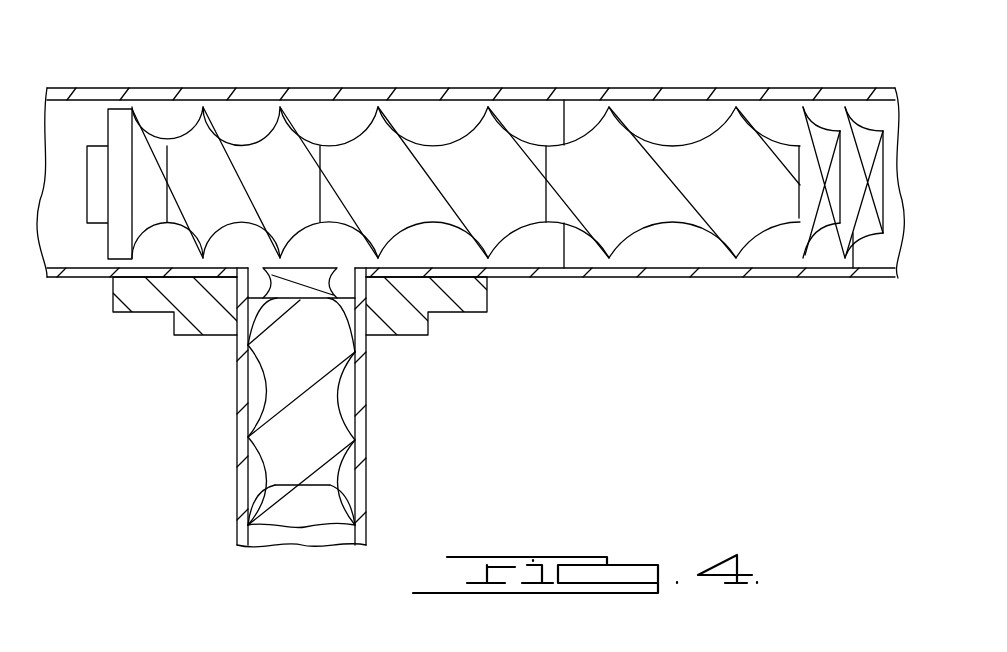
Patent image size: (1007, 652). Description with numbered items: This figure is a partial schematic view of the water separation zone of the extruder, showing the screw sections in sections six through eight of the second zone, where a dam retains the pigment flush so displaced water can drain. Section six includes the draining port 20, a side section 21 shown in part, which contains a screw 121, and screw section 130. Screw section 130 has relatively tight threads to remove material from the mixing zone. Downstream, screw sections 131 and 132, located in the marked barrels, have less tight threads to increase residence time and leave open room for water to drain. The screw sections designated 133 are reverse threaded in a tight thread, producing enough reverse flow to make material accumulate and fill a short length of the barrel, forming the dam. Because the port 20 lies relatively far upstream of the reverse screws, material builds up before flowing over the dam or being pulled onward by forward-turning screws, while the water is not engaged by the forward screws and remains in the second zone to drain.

The port 20 is at (430, 313).
The side section 21 is at (366, 415).
The screw 121 is at (333, 473).
The screw section 130 is at (259, 142).
The screw section 131 is at (433, 142).
The screw section 132 is at (678, 142).
The reverse threaded screw sections 133 is at (863, 133).